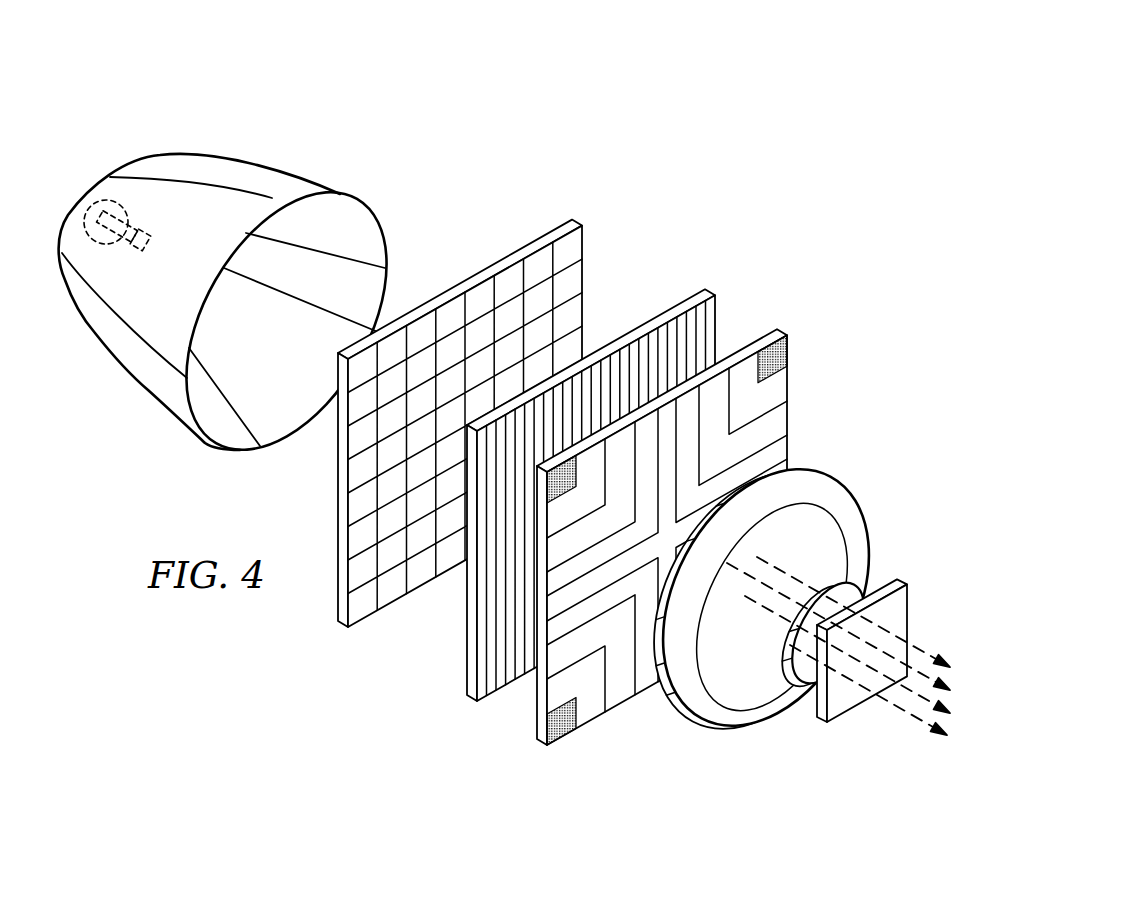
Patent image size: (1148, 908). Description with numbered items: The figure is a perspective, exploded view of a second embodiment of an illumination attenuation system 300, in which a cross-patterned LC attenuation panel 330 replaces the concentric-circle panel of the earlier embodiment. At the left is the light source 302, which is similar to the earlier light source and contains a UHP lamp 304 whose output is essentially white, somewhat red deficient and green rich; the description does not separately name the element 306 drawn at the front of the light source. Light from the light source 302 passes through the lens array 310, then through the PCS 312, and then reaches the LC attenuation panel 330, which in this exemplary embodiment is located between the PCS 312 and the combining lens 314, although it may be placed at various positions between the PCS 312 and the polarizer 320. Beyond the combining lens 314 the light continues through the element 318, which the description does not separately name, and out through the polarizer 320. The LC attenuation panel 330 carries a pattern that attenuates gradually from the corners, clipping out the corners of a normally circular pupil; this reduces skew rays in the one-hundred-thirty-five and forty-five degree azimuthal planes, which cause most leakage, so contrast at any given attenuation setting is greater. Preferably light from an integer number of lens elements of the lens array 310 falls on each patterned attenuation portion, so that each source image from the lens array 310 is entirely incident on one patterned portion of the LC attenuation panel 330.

The illumination attenuation system 300 is at (381, 717).
The light source 302 is at (148, 388).
The lamp 304 is at (133, 208).
The reflector 306 is at (347, 215).
The lens array 310 is at (576, 216).
The PCS 312 is at (708, 292).
The combining lens 314 is at (802, 463).
The second lens 318 is at (843, 585).
The polarizer 320 is at (823, 723).
The LC attenuation panel 330 is at (778, 330).